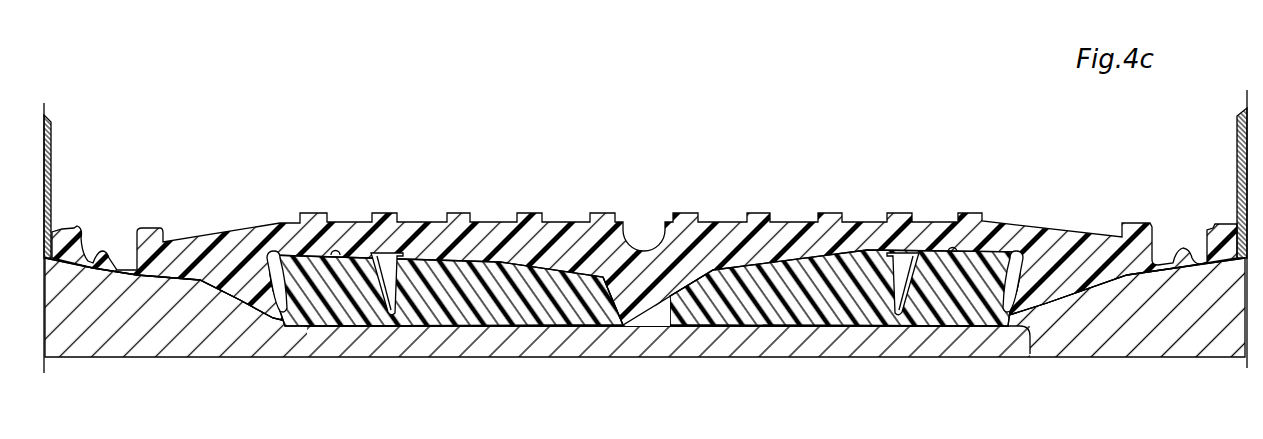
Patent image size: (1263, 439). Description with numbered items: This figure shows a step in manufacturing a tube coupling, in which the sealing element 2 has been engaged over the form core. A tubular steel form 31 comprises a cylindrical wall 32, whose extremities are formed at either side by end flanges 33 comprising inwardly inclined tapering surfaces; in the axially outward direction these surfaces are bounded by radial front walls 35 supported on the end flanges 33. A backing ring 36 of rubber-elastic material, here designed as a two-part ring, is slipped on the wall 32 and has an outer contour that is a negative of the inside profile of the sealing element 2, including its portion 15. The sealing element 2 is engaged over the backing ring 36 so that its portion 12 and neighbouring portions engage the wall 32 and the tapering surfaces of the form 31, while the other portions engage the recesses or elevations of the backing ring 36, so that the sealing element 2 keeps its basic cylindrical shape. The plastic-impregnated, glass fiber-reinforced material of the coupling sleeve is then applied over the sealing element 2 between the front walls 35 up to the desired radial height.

The sealing element 2 is at (568, 237).
The portion of sealing element 12 is at (242, 300).
The portion of sealing element 15 is at (385, 303).
The tubular steel form 31 is at (918, 361).
The cylindrical wall 32 is at (783, 347).
The end flanges 33 is at (78, 349).
The radial front walls 35 is at (45, 166).
The backing ring 36 is at (687, 317).